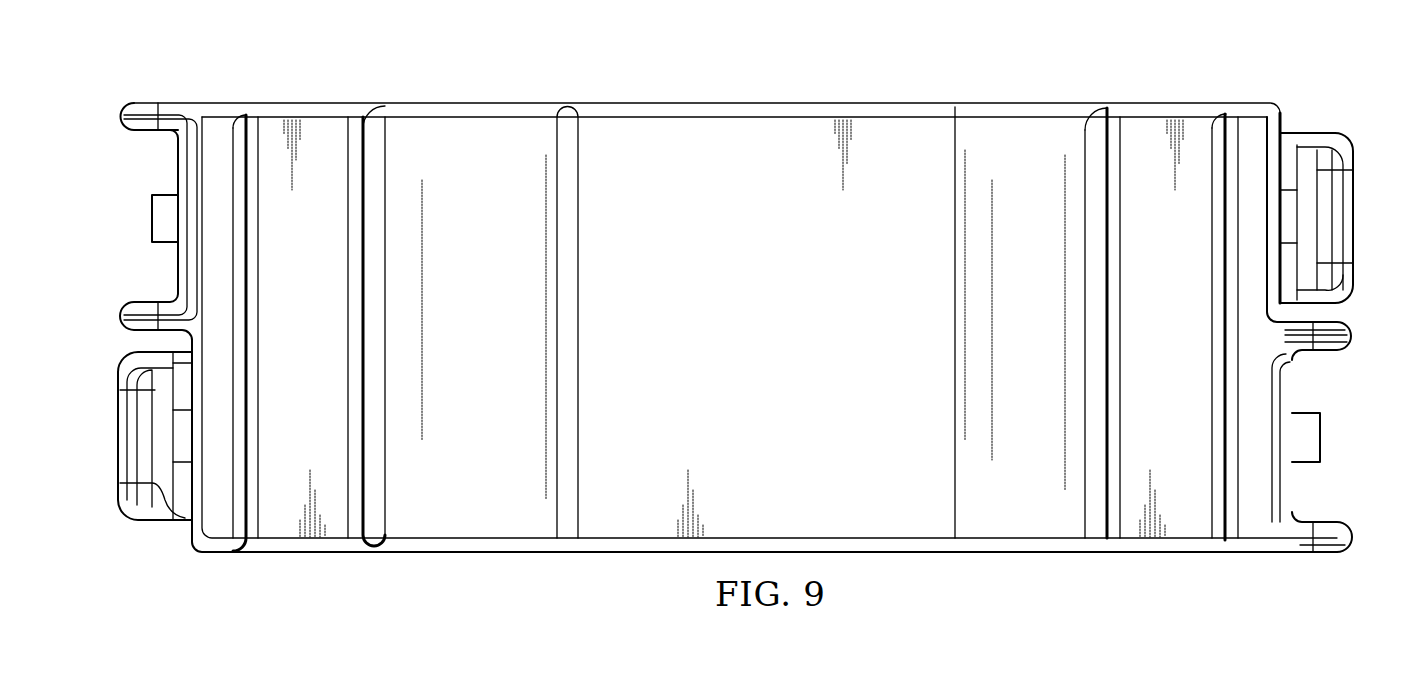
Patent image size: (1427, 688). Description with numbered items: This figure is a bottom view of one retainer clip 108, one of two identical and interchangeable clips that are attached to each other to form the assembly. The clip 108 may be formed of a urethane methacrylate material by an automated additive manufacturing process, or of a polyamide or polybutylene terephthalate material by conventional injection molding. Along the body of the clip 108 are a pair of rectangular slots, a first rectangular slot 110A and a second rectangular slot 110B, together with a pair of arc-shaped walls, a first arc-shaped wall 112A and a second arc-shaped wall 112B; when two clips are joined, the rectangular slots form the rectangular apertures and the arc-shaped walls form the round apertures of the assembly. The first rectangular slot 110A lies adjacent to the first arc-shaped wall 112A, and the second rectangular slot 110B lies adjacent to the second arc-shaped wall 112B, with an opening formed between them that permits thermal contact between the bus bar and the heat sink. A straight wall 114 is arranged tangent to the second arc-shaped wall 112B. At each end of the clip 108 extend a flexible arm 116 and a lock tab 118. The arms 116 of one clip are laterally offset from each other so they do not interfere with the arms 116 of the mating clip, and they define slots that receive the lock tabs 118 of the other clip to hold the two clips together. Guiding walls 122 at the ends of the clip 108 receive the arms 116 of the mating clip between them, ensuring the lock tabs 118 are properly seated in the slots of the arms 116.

The retainer clip 108 is at (652, 103).
The first rectangular slot 110A is at (330, 130).
The second rectangular slot 110B is at (1142, 130).
The first arc-shaped wall 112A is at (440, 127).
The second arc-shaped wall 112B is at (1017, 127).
The straight wall 114 is at (790, 127).
The flexible arm 116 is at (115, 437).
The lock tab 118 is at (152, 217).
The guiding wall 122 is at (133, 103).